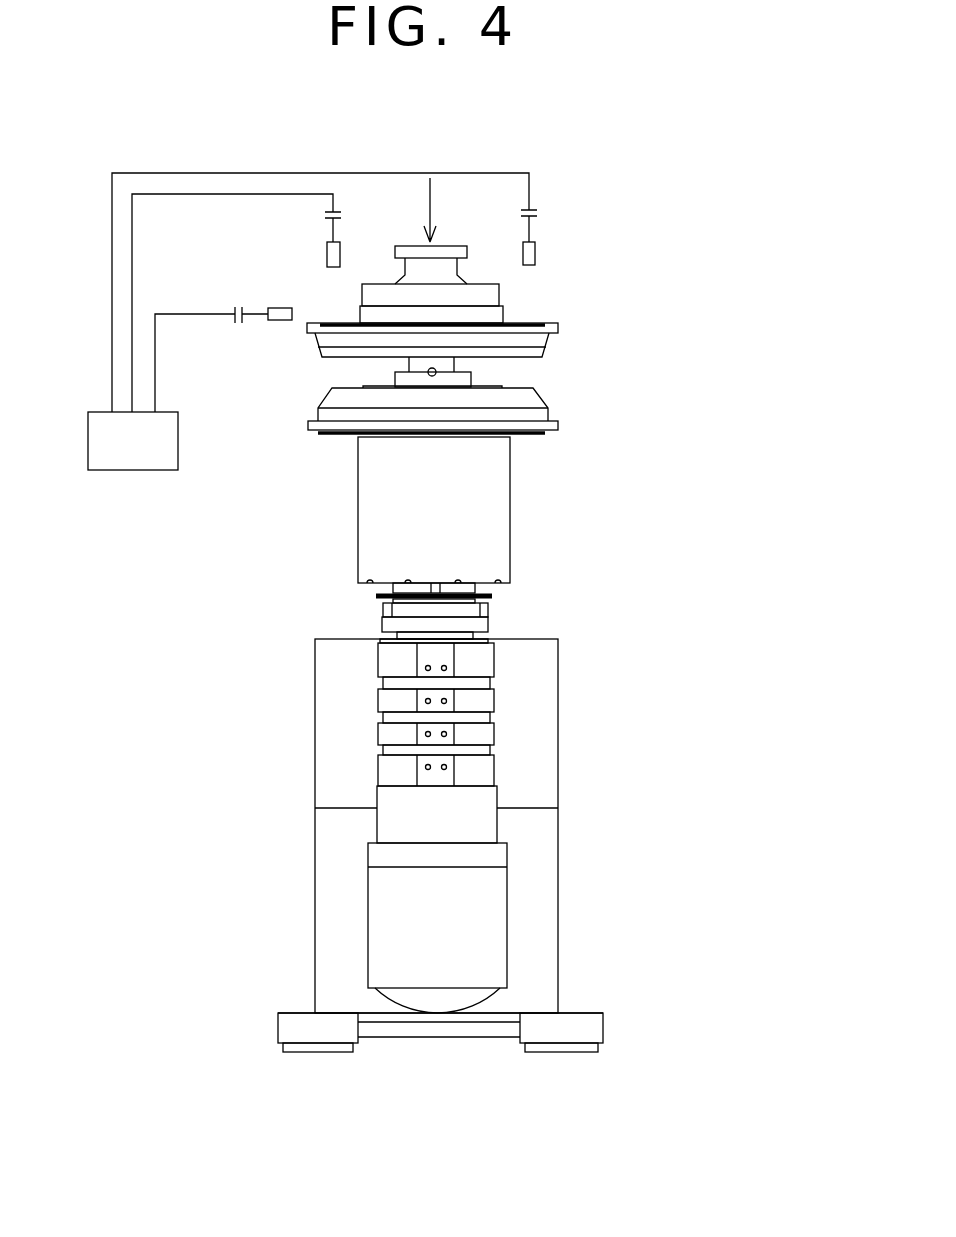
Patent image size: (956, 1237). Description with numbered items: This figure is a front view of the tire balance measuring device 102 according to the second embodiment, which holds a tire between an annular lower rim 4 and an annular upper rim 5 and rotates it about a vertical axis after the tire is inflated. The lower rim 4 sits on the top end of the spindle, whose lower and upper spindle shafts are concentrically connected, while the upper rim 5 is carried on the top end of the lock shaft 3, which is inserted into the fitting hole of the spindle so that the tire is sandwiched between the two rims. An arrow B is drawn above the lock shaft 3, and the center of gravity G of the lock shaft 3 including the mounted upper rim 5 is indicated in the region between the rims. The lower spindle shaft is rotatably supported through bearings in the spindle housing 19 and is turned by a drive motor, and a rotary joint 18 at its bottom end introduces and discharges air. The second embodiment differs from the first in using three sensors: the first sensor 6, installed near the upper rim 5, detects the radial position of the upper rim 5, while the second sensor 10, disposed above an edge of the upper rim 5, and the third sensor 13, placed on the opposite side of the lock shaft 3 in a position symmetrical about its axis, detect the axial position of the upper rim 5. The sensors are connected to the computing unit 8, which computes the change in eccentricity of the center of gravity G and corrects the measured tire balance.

The tire balance measuring device 102 is at (677, 188).
The load direction B is at (438, 210).
The center of gravity G is at (438, 370).
The lock shaft 3 is at (467, 251).
The lower rim 4 is at (548, 397).
The upper rim 5 is at (558, 325).
The first sensor 6 is at (281, 320).
The computing unit 8 is at (178, 428).
The second sensor 10 is at (327, 252).
The third sensor 13 is at (535, 252).
The rotary joint 18 is at (490, 823).
The spindle housing 19 is at (487, 702).